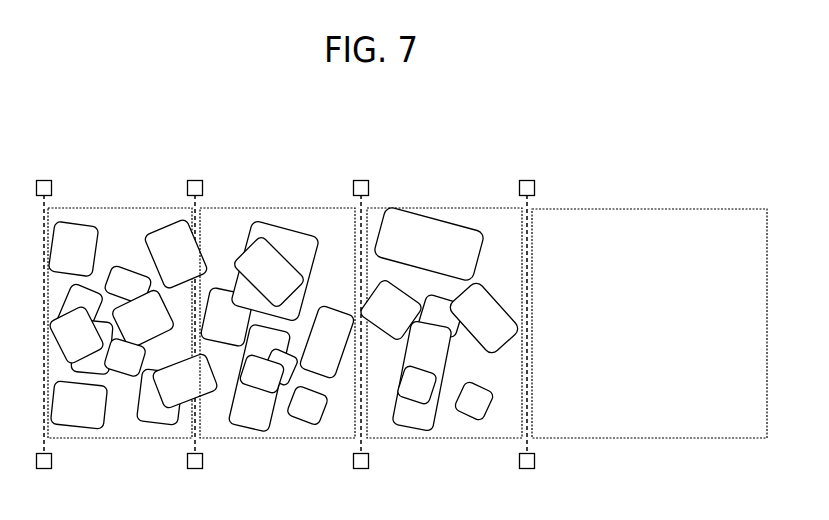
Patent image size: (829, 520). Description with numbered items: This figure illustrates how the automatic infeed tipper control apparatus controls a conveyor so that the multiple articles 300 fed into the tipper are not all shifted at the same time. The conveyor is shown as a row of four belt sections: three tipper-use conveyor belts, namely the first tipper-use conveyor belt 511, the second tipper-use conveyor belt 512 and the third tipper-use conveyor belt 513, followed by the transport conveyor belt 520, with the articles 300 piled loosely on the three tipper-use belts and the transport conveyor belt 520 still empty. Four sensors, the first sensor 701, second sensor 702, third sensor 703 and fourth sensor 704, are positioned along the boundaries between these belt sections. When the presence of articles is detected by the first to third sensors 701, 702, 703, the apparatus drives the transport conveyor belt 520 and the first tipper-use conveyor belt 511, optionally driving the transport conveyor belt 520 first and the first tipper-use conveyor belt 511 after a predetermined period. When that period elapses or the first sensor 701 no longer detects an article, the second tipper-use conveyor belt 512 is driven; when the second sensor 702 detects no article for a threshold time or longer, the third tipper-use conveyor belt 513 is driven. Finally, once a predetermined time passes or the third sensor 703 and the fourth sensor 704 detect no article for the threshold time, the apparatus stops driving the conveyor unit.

The articles 300 is at (412, 225).
The first tipper-use conveyor belt 511 is at (440, 331).
The second tipper-use conveyor belt 512 is at (278, 443).
The third tipper-use conveyor belt 513 is at (125, 443).
The transport conveyor belt 520 is at (652, 443).
The first sensor 701 is at (527, 180).
The second sensor 702 is at (361, 180).
The third sensor 703 is at (195, 180).
The fourth sensor 704 is at (44, 180).